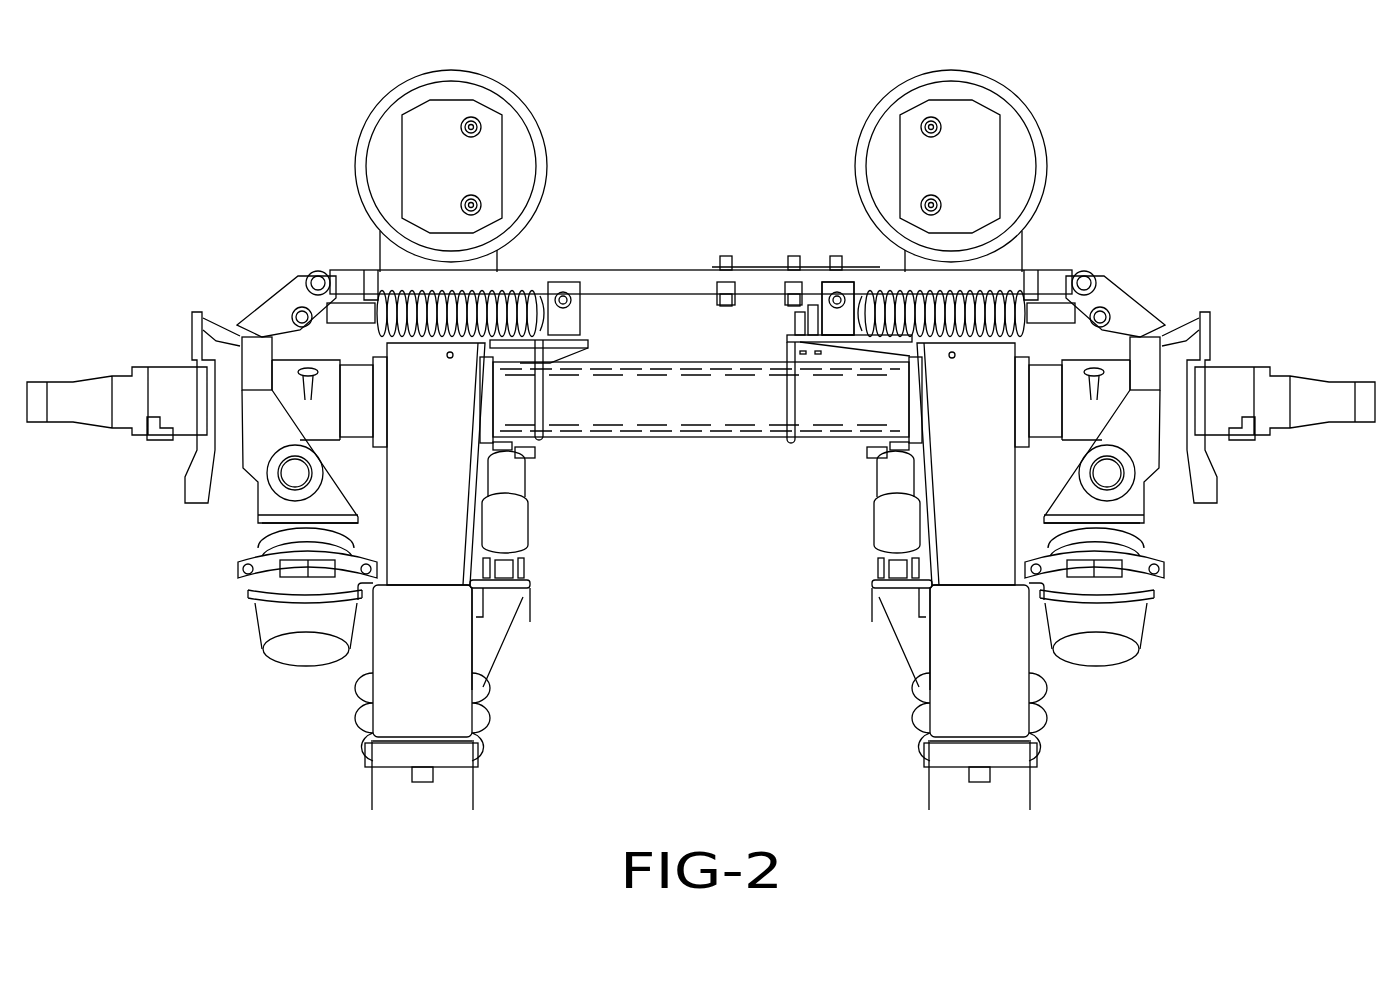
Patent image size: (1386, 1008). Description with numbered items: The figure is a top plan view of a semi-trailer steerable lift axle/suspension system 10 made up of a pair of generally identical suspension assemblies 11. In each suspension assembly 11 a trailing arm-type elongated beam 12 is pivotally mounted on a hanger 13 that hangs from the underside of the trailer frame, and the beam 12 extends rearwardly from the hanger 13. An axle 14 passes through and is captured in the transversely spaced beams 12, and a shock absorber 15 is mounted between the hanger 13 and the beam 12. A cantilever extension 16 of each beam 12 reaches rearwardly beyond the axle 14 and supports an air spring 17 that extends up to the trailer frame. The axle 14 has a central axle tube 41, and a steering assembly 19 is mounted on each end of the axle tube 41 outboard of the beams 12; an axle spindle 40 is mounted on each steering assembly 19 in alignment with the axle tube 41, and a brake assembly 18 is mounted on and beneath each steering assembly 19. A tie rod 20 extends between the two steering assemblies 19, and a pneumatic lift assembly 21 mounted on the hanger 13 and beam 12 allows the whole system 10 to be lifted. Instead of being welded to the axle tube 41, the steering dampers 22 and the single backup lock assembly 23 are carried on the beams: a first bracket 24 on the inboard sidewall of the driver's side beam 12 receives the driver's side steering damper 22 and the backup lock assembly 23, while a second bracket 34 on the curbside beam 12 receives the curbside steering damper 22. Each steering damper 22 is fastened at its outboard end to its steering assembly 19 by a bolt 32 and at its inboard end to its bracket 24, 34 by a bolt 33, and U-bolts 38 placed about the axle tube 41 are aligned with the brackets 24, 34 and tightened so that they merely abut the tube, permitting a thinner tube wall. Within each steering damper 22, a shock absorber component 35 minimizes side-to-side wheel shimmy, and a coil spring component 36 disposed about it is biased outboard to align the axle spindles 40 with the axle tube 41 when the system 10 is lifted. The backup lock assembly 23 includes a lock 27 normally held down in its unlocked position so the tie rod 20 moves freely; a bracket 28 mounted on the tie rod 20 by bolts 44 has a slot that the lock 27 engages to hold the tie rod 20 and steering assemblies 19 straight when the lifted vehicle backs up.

The steerable lift axle/suspension system 10 is at (188, 178).
The suspension assembly 11 is at (492, 398).
The beam 12 is at (414, 499).
The hanger 13 is at (406, 677).
The axle 14 is at (651, 440).
The shock absorber 15 is at (528, 520).
The cantilever extension 16 is at (482, 268).
The air spring 17 is at (518, 95).
The brake assembly 18 is at (255, 640).
The steering assembly 19 is at (250, 293).
The tie rod 20 is at (605, 270).
The pneumatic lift assembly 21 is at (497, 745).
The steering damper 22 is at (352, 296).
The backup lock assembly 23 is at (820, 338).
The first bracket 24 is at (785, 346).
The lock 27 is at (828, 285).
The bracket 28 is at (706, 268).
The bolt 32 is at (300, 292).
The bolt 33 is at (563, 292).
The second bracket 34 is at (596, 342).
The shock absorber component 35 is at (302, 306).
The coil spring component 36 is at (448, 358).
The U-bolt 38 is at (545, 405).
The axle spindle 40 is at (122, 400).
The axle tube 41 is at (677, 415).
The bolt 44 is at (790, 257).